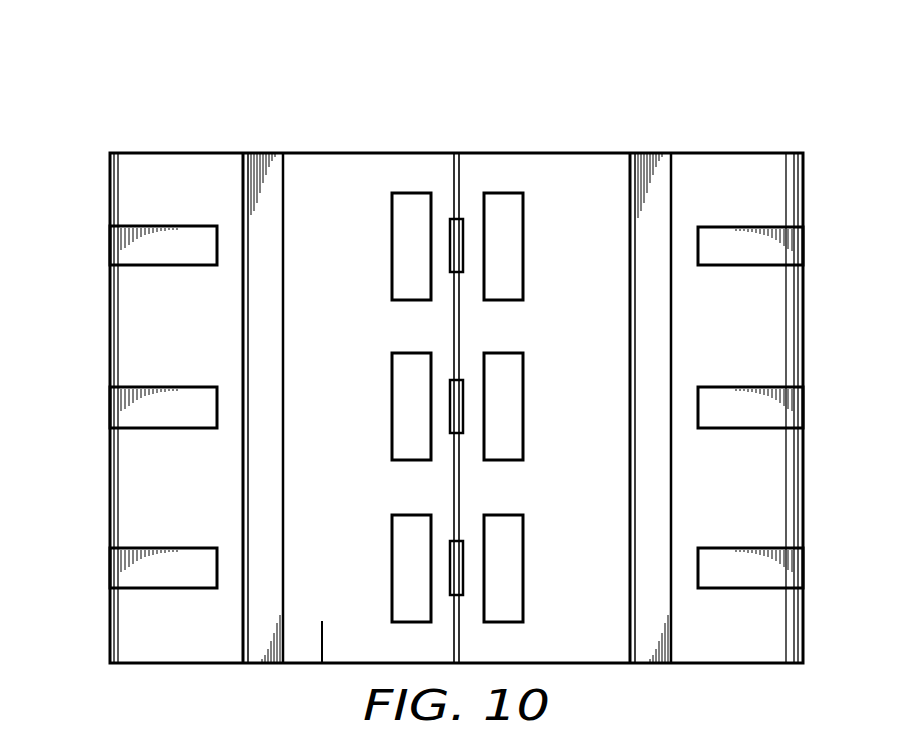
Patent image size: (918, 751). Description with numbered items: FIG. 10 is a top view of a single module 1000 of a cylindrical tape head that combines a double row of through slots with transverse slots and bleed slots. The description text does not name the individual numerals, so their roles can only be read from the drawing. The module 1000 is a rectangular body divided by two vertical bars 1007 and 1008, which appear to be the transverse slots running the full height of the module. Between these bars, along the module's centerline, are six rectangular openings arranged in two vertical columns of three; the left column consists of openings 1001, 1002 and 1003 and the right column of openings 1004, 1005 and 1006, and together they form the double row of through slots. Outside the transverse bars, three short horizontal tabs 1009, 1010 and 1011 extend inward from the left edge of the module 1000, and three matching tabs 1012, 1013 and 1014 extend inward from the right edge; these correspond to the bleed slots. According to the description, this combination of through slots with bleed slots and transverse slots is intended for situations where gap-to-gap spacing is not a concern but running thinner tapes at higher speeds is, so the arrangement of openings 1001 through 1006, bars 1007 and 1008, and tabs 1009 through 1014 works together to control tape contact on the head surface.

The package / module assembly 1000 is at (160, 96).
The first contact pad 1001 is at (396, 246).
The second contact pad 1002 is at (396, 406).
The third contact pad 1003 is at (396, 569).
The fourth contact pad 1004 is at (517, 247).
The fifth contact pad 1005 is at (516, 406).
The sixth contact pad 1006 is at (516, 568).
The left vertical bar 1007 is at (257, 483).
The right vertical bar 1008 is at (657, 332).
The left upper tab 1009 is at (123, 252).
The left middle tab 1010 is at (123, 413).
The left lower tab 1011 is at (123, 574).
The right upper tab 1012 is at (792, 252).
The right middle tab 1013 is at (790, 414).
The right lower tab 1014 is at (790, 577).